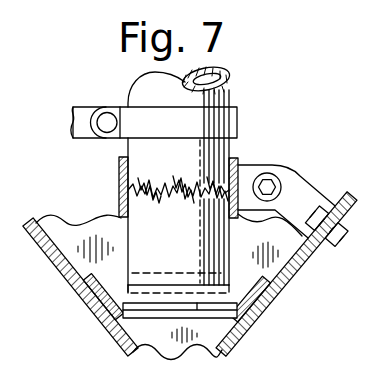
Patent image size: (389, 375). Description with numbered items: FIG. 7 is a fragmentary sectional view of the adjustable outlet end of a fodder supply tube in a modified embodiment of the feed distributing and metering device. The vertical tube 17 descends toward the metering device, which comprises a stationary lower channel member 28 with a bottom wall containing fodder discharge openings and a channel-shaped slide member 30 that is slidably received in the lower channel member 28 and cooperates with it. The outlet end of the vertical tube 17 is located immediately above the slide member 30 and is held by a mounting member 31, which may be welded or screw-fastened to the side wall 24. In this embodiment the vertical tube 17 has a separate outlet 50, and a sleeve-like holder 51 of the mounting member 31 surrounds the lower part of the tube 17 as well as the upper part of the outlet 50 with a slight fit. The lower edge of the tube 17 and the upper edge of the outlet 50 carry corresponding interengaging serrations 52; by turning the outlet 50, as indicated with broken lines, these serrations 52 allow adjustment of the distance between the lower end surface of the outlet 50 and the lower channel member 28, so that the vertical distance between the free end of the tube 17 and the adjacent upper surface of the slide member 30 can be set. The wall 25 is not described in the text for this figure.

The vertical tube 17 is at (218, 150).
The side wall 24 is at (305, 258).
The first inclined side wall 25 is at (78, 285).
The lower channel member 28 is at (107, 312).
The slide member 30 is at (266, 306).
The mounting member 31 is at (301, 184).
The outlet 50 is at (149, 241).
The sleeve-like holder 51 is at (202, 196).
The interengaging serrations 52 is at (119, 170).